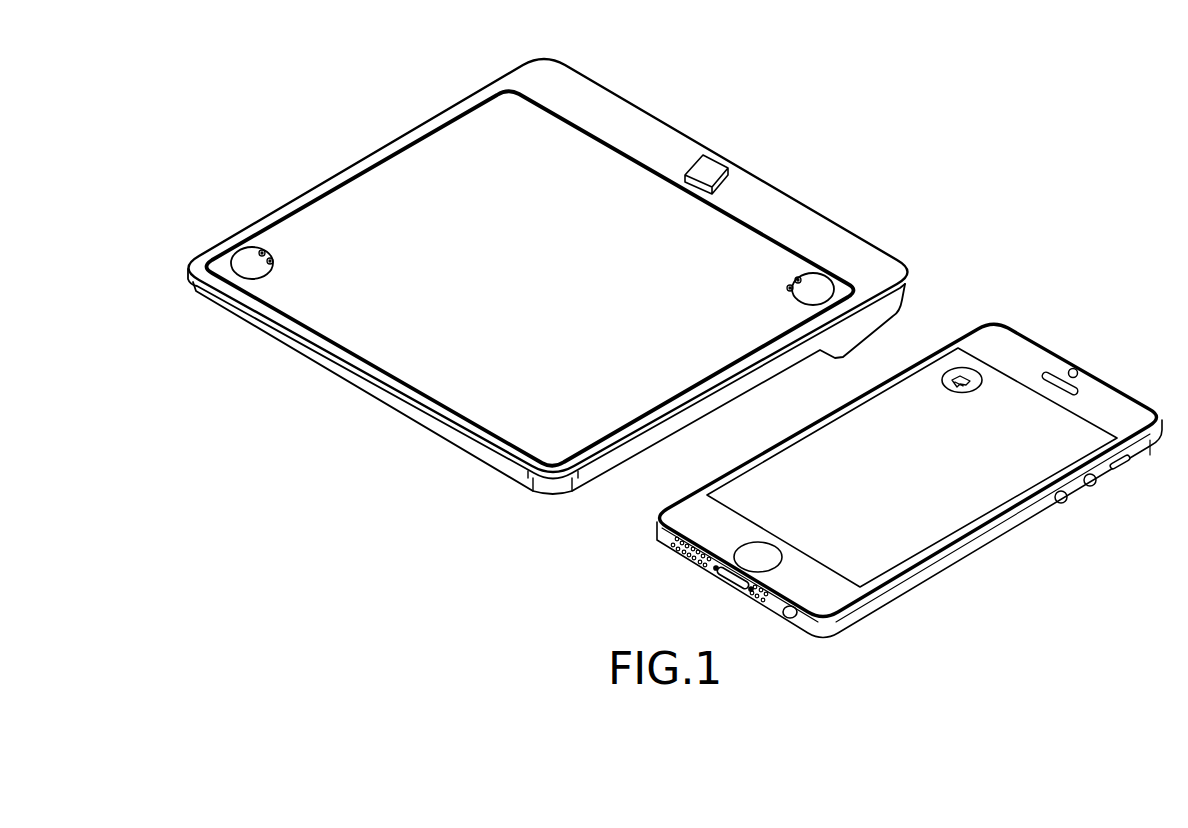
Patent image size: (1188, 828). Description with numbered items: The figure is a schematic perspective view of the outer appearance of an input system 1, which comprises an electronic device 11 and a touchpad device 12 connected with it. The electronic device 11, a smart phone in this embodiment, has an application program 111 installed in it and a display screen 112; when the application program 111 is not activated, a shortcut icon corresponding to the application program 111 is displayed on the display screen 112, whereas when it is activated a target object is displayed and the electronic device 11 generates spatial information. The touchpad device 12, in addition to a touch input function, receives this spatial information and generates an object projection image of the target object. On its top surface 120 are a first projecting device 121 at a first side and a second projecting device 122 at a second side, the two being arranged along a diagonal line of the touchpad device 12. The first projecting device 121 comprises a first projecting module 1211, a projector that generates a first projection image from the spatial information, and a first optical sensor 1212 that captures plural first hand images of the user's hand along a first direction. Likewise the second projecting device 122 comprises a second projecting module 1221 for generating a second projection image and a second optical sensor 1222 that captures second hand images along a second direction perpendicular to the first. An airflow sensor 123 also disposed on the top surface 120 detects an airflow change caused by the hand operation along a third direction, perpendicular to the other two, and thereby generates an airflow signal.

The input system 1 is at (1064, 109).
The electronic device 11 is at (1106, 402).
The application program 111 is at (940, 378).
The display screen 112 is at (958, 505).
The touchpad device 12 is at (788, 214).
The top surface 120 is at (447, 387).
The first projecting device 121 is at (818, 281).
The first projecting module 1211 is at (797, 277).
The first optical sensor 1212 is at (788, 287).
The second projecting device 122 is at (242, 251).
The second projecting module 1221 is at (264, 250).
The second optical sensor 1222 is at (274, 259).
The airflow sensor 123 is at (714, 168).